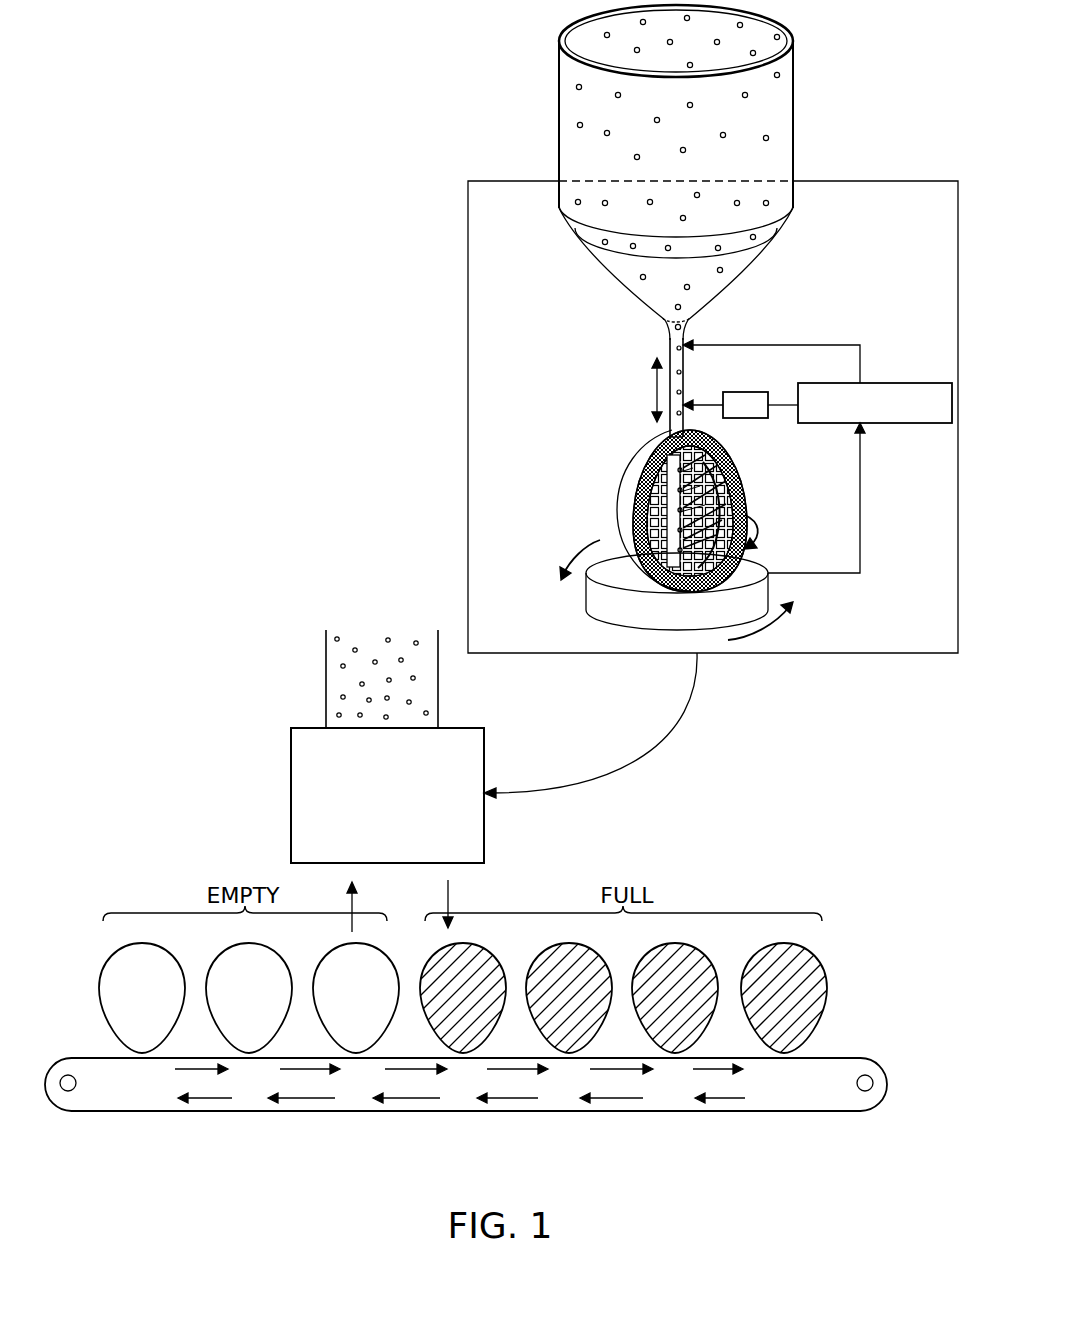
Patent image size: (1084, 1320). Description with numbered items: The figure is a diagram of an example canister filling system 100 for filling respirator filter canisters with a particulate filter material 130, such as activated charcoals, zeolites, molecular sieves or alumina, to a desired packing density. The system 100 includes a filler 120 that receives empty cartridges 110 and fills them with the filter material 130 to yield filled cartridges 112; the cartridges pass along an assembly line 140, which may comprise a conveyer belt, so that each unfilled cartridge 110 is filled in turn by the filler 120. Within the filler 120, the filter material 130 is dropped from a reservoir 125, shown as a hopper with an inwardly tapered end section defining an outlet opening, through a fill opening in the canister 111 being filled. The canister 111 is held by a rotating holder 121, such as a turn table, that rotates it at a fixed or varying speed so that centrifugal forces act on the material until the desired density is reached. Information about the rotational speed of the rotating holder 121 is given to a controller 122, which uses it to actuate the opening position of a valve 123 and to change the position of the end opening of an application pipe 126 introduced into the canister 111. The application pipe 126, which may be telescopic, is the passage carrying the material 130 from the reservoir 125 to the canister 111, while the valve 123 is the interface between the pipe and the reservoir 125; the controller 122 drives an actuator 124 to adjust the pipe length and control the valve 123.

The canister filling system 100 is at (215, 16).
The empty cartridge 110 is at (114, 954).
The canister 111 is at (617, 495).
The filled cartridge 112 is at (490, 948).
The filler 120 is at (468, 353).
The rotating holder 121 is at (590, 606).
The controller 122 is at (899, 383).
The valve 123 is at (684, 338).
The actuator 124 is at (750, 392).
The reservoir 125 is at (795, 124).
The application pipe 126 is at (684, 416).
The particulate filter material 130 is at (573, 101).
The assembly line 140 is at (468, 1112).